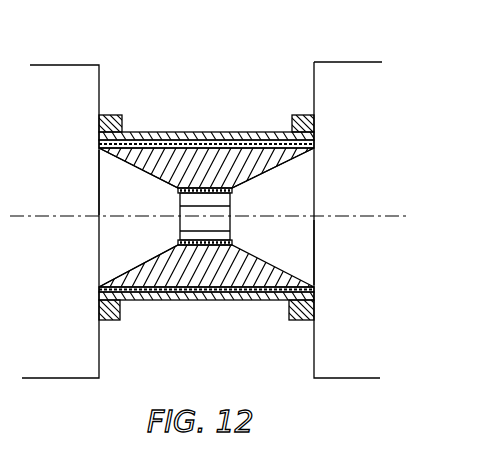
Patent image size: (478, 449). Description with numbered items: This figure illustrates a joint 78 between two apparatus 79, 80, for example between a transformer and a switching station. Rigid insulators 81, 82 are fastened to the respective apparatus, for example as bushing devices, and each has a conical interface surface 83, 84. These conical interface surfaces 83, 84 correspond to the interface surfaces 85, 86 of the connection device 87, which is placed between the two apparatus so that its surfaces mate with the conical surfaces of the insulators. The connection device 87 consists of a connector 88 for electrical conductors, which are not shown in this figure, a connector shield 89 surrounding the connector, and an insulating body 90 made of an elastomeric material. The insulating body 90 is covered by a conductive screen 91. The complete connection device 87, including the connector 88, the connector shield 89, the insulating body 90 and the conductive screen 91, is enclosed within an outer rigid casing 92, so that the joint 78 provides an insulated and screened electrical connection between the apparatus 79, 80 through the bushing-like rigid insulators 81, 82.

The joint 78 is at (381, 28).
The apparatus 79 is at (400, 186).
The apparatus 80 is at (57, 331).
The rigid insulator 81 is at (288, 244).
The rigid insulator 82 is at (125, 193).
The conical interface surface 83 is at (143, 262).
The conical interface surface 84 is at (288, 267).
The interface surface 85 is at (128, 168).
The interface surface 86 is at (282, 169).
The connection device 87 is at (110, 114).
The connector 88 is at (197, 233).
The connector shield 89 is at (215, 247).
The insulating body 90 is at (196, 170).
The conductive screen 91 is at (313, 144).
The outer rigid casing 92 is at (240, 131).